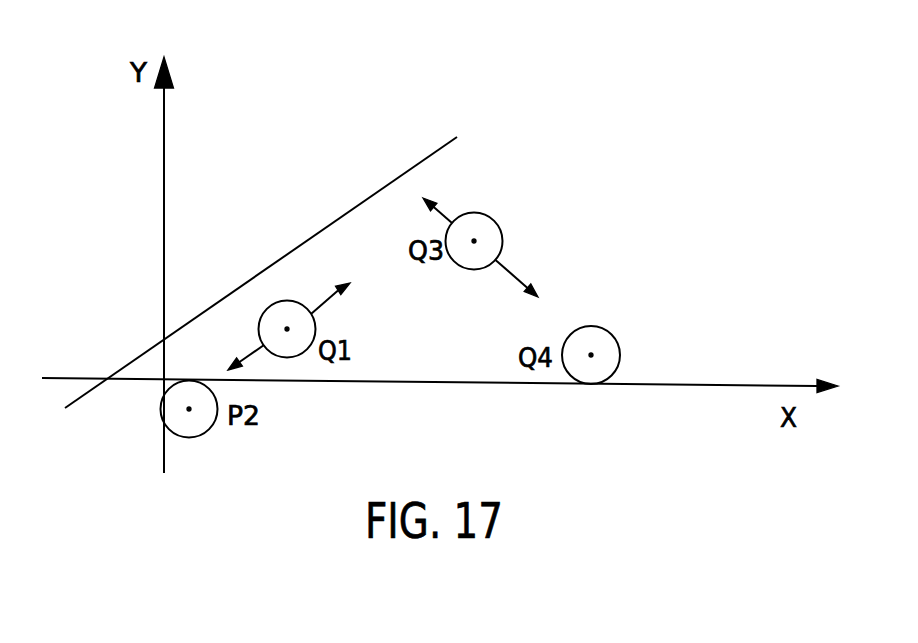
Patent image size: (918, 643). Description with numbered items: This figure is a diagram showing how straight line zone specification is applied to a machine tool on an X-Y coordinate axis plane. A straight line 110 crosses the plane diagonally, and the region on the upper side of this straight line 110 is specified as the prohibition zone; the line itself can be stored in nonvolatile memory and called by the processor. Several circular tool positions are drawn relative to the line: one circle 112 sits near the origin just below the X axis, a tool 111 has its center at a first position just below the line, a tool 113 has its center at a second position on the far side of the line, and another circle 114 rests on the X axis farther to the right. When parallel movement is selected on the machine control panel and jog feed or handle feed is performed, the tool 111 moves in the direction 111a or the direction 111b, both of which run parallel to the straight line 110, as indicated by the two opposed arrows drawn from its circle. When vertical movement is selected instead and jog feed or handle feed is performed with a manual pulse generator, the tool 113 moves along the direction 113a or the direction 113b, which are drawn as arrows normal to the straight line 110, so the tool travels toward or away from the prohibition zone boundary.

The straight line 110 is at (291, 228).
The tool 111 is at (264, 329).
The direction 111a is at (217, 354).
The direction 111b is at (326, 282).
The circle P2 112 is at (189, 427).
The tool 113 is at (497, 234).
The direction 113a is at (454, 194).
The direction 113b is at (538, 271).
The circle Q4 114 is at (621, 355).